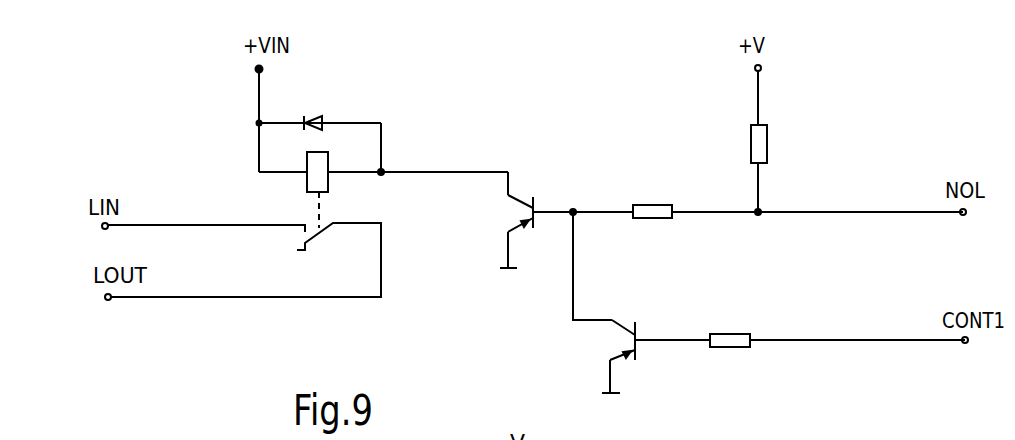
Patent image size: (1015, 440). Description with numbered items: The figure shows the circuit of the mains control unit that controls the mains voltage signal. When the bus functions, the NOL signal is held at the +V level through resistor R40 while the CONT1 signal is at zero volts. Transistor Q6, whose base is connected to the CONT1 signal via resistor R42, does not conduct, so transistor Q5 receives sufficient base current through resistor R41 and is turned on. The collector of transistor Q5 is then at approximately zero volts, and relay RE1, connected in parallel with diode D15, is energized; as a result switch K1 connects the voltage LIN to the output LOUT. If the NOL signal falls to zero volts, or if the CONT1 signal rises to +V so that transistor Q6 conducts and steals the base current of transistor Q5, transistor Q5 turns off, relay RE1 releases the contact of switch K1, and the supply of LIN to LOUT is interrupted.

The diode D15 is at (320, 131).
The relay RE1 is at (320, 190).
The switch K1 is at (244, 260).
The transistor Q5 is at (520, 231).
The transistor Q6 is at (639, 356).
The resistor R40 is at (778, 141).
The resistor R41 is at (665, 196).
The resistor R42 is at (837, 326).